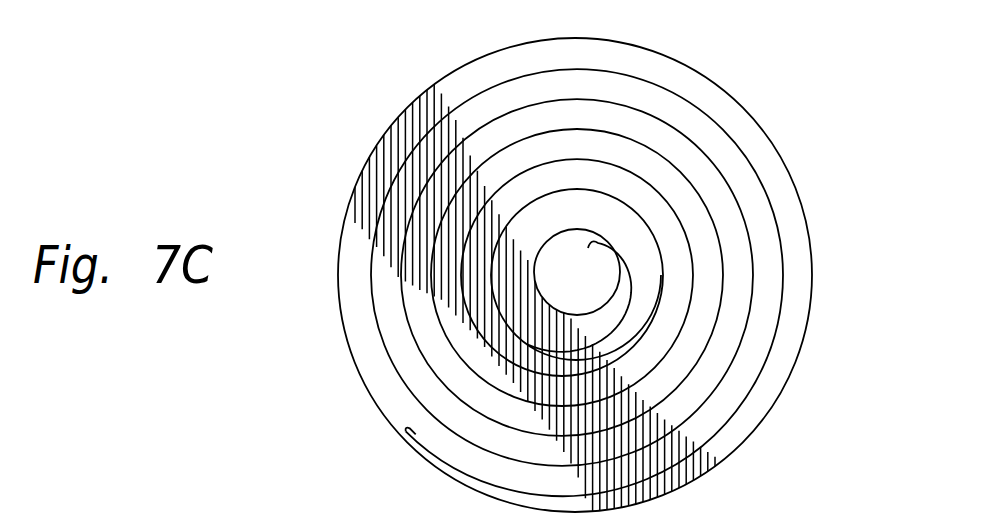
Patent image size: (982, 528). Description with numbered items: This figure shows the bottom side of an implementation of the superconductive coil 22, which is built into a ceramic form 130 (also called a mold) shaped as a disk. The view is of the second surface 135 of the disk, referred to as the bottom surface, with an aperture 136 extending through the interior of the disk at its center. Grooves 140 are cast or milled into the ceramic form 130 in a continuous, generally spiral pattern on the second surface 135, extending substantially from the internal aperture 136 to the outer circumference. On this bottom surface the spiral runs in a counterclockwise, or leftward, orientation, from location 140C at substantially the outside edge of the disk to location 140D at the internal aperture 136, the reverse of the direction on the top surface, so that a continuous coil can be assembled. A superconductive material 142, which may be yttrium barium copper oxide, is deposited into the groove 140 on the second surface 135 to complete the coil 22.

The coil 22 is at (806, 81).
The ceramic form 130 is at (752, 437).
The second surface 135 is at (740, 380).
The grooves 140 is at (772, 352).
The superconductive material 142 is at (753, 298).
The location at the outside edge of the second surface 140C is at (400, 437).
The location at the internal aperture of the second surface 140D is at (579, 296).
The aperture 136 is at (585, 316).